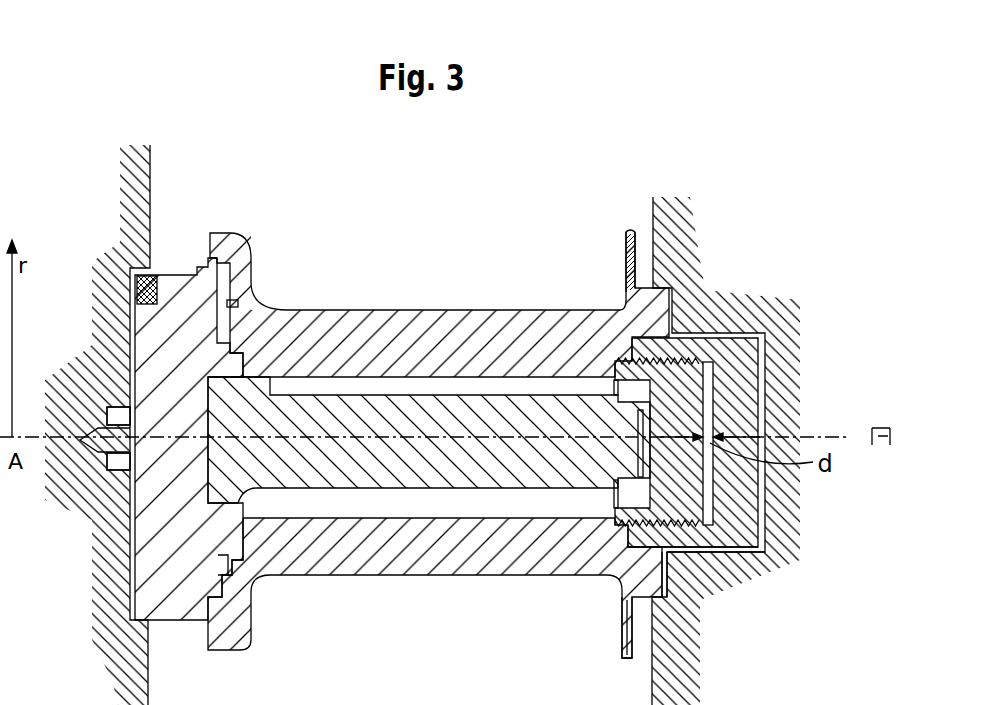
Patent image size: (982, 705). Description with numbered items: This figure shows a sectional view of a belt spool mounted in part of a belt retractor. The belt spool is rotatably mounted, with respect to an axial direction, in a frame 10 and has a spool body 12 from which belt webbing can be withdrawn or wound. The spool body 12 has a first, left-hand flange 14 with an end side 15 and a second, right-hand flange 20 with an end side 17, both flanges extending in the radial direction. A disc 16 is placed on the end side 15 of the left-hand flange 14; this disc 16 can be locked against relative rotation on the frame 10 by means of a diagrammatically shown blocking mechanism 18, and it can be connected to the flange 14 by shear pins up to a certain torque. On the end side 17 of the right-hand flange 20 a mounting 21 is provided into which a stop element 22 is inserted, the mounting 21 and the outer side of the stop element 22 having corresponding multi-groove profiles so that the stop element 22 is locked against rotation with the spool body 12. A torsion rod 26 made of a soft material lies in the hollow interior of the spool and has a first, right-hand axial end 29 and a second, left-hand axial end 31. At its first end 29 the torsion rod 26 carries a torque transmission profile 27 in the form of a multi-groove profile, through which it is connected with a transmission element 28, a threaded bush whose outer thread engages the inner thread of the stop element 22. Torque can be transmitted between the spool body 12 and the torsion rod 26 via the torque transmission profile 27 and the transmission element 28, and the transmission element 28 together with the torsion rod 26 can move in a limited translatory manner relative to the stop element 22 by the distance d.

The frame 10 is at (133, 182).
The spool body 12 is at (377, 327).
The left-hand flange 14 is at (232, 635).
The end side 15 is at (218, 547).
The disc 16 is at (170, 610).
The end side 17 is at (660, 328).
The blocking mechanism 18 is at (137, 291).
The right-hand flange 20 is at (625, 632).
The mounting 21 is at (745, 552).
The stop element 22 is at (752, 518).
The torsion rod 26 is at (397, 470).
The torque transmission profile 27 is at (640, 505).
The transmission element 28 is at (635, 397).
The first axial end 29 is at (670, 568).
The second axial end 31 is at (233, 398).